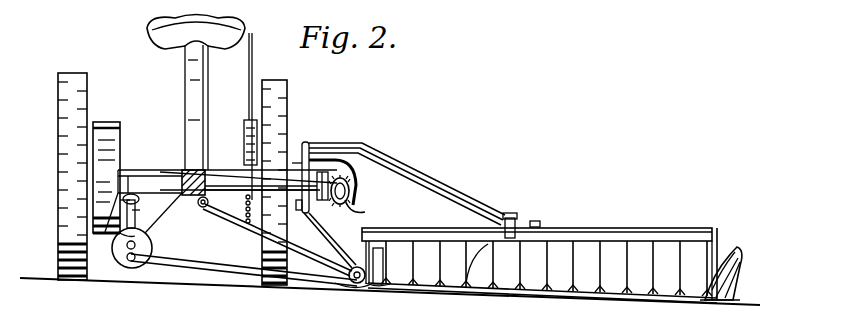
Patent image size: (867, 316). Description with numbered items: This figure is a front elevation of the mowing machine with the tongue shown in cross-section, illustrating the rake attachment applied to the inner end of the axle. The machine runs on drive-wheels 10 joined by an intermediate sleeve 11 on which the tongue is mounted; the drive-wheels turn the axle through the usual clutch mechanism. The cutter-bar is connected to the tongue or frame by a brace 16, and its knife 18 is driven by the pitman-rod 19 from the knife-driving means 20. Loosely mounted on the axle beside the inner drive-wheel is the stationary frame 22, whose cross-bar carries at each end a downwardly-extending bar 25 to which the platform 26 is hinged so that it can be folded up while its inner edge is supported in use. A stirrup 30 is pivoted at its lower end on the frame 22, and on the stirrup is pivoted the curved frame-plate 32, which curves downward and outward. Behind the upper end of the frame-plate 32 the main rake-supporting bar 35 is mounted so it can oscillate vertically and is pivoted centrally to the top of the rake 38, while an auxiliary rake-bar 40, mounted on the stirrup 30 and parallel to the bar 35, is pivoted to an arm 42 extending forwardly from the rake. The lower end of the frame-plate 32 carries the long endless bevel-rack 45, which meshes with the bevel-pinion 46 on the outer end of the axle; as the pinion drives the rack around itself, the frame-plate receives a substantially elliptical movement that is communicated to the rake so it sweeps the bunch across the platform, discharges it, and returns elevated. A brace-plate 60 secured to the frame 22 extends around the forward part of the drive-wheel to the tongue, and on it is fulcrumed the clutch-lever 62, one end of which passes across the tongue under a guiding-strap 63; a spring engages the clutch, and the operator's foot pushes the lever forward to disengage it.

The drive-wheel 10 is at (262, 98).
The intermediate sleeve 11 is at (144, 166).
The brace 16 is at (216, 232).
The knife 18 is at (488, 296).
The pitman-rod 19 is at (178, 272).
The knife-driving means 20 is at (114, 256).
The stationary frame 22 is at (297, 211).
The downwardly-extending bar 25 is at (320, 243).
The platform 26 is at (680, 228).
The stirrup 30 is at (292, 160).
The curved frame-plate 32 is at (350, 168).
The main rake-supporting bar 35 is at (420, 190).
The rake 38 is at (595, 232).
The auxiliary rake-bar 40 is at (410, 174).
The arm 42 is at (517, 218).
The endless bevel-rack 45 is at (326, 216).
The bevel-pinion 46 is at (368, 213).
The brace-plate 60 is at (215, 203).
The clutch-lever 62 is at (242, 162).
The guiding-strap 63 is at (182, 170).